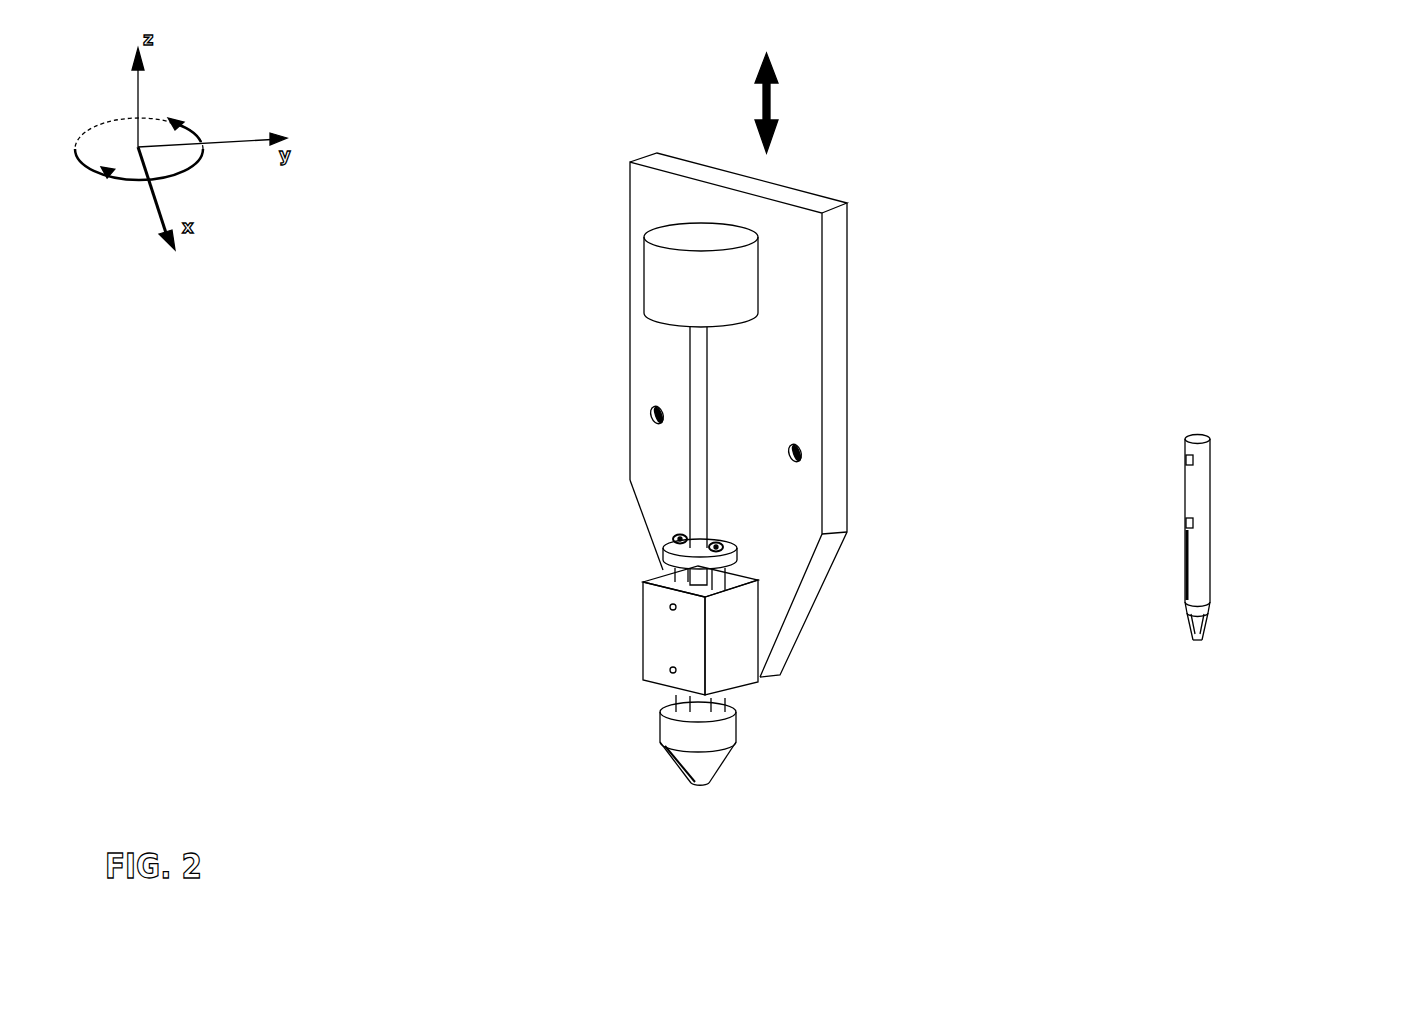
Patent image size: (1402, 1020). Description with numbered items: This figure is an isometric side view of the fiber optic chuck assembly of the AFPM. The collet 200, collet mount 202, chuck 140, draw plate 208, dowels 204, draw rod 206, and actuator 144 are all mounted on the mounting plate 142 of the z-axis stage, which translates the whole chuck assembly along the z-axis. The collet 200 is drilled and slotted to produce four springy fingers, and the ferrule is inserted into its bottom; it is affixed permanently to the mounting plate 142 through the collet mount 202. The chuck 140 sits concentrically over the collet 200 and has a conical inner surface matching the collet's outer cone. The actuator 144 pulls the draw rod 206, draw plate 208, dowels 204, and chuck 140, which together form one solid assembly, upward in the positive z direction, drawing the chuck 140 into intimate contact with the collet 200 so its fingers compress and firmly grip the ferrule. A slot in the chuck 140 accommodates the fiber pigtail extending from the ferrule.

The chuck 140 is at (717, 758).
The mounting plate 142 is at (630, 162).
The actuator 144 is at (665, 279).
The collet 200 is at (660, 717).
The collet mount 202 is at (717, 643).
The dowels 204 is at (757, 590).
The draw rod 206 is at (697, 435).
The draw plate 208 is at (663, 550).